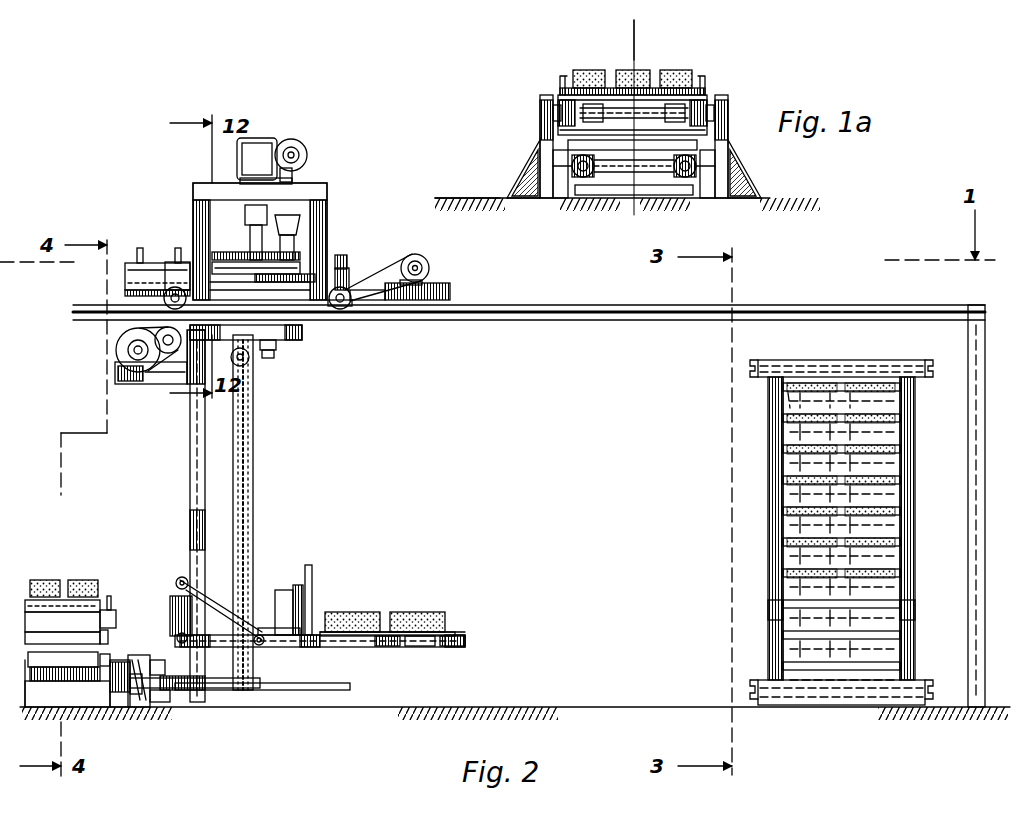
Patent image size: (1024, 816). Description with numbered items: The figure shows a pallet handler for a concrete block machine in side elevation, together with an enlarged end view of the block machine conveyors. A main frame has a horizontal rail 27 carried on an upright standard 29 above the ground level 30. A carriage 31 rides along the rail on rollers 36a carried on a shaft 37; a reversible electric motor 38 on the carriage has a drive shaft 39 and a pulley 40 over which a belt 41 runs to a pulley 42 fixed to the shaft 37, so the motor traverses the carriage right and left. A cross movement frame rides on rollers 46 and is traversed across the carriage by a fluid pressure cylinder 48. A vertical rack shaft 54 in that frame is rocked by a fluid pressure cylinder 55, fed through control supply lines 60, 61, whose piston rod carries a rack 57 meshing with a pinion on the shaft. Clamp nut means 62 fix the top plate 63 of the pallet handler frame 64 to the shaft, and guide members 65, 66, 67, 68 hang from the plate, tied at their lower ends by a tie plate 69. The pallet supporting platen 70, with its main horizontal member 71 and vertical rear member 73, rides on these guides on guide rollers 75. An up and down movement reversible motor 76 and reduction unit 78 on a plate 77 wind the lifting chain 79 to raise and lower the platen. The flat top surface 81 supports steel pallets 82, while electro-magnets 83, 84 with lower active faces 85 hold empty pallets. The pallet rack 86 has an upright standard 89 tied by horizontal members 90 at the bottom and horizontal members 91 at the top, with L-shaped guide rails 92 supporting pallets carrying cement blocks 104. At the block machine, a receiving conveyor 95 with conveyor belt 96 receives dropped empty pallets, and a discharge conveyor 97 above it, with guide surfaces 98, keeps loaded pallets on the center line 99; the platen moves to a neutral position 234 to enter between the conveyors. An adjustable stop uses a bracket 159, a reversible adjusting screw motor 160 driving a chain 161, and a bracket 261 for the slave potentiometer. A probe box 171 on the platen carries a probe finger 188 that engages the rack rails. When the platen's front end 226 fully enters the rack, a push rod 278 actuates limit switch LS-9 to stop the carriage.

In FIG. 2, the horizontal rail 27 is at (795, 305).
In FIG. 2, the upright standard 29 is at (985, 395).
In FIG. 1A, the ground level 30 is at (476, 198).
In FIG. 2, the ground level 30 is at (540, 707).
In FIG. 2, the carriage 31 is at (218, 181).
In FIG. 2, the roller 36a is at (163, 298).
In FIG. 2, the shaft 37 is at (355, 305).
In FIG. 2, the reversible electric motor 38 is at (420, 238).
In FIG. 2, the drive shaft 39 is at (425, 258).
In FIG. 2, the pulley 40 is at (430, 270).
In FIG. 2, the belt 41 is at (386, 272).
In FIG. 2, the pulley 42 is at (342, 312).
In FIG. 2, the rollers 46 is at (170, 248).
In FIG. 2, the fluid pressure cylinder 48 is at (352, 255).
In FIG. 2, the rack shaft 54 is at (274, 356).
In FIG. 2, the fluid pressure cylinder 55 is at (148, 264).
In FIG. 2, the rack 57 is at (248, 262).
In FIG. 2, the control supply line 60 is at (132, 263).
In FIG. 2, the control supply line 61 is at (180, 263).
In FIG. 2, the clamp nut means 62 is at (280, 340).
In FIG. 2, the top plate 63 is at (278, 345).
In FIG. 2, the pallet handler frame 64 is at (188, 455).
In FIG. 2, the guide member 65 is at (190, 523).
In FIG. 2, the guide member 66 is at (190, 500).
In FIG. 2, the guide member 67 is at (256, 478).
In FIG. 2, the guide member 68 is at (256, 502).
In FIG. 2, the tie plate 69 is at (185, 668).
In FIG. 1A, the pallet supporting platen 70 is at (611, 96).
In FIG. 2, the pallet supporting platen 70 is at (465, 632).
In FIG. 2, the main horizontal member 71 is at (455, 648).
In FIG. 2, the vertical rear member 73 is at (172, 612).
In FIG. 2, the guide roller 75 is at (185, 578).
In FIG. 2, the up and down movement reversible motor 76 is at (116, 350).
In FIG. 2, the plate 77 is at (150, 385).
In FIG. 2, the reduction unit 78 is at (157, 333).
In FIG. 2, the lifting chain 79 is at (255, 432).
In FIG. 2, the top surface 81 is at (425, 612).
In FIG. 1A, the steel pallets 82 is at (652, 72).
In FIG. 2, the steel pallets 82 is at (335, 612).
In FIG. 2, the electro-magnet 83 is at (348, 648).
In FIG. 2, the electro-magnet 84 is at (426, 648).
In FIG. 2, the lower active faces 85 is at (385, 648).
In FIG. 2, the pallet rack 86 is at (768, 507).
In FIG. 2, the upright standard 89 is at (249, 362).
In FIG. 2, the horizontal members 90 is at (760, 707).
In FIG. 2, the horizontal members 91 is at (782, 362).
In FIG. 2, the L-shaped guide rails 92 is at (858, 383).
In FIG. 1A, the receiving conveyor 95 is at (645, 200).
In FIG. 2, the receiving conveyor 95 is at (75, 675).
In FIG. 1A, the conveyor belt 96 is at (578, 190).
In FIG. 1A, the discharge conveyor 97 is at (556, 84).
In FIG. 2, the discharge conveyor 97 is at (112, 610).
In FIG. 1A, the guide surfaces 98 is at (560, 78).
In FIG. 1A, the center line 99 is at (637, 36).
In FIG. 2, the cement blocks 104 is at (415, 612).
In FIG. 2, the bracket 159 is at (300, 225).
In FIG. 2, the reversible adjusting screw motor 160 is at (292, 138).
In FIG. 2, the chain 161 is at (300, 183).
In FIG. 2, the probe box 171 is at (276, 590).
In FIG. 2, the probe finger 188 is at (296, 645).
In FIG. 2, the front end 226 is at (466, 641).
In FIG. 1A, the neutral position 234 is at (624, 114).
In FIG. 2, the bracket 261 is at (246, 212).
In FIG. 2, the push rod 278 is at (300, 690).
In FIG. 2, the limit switch LS-9 is at (170, 705).